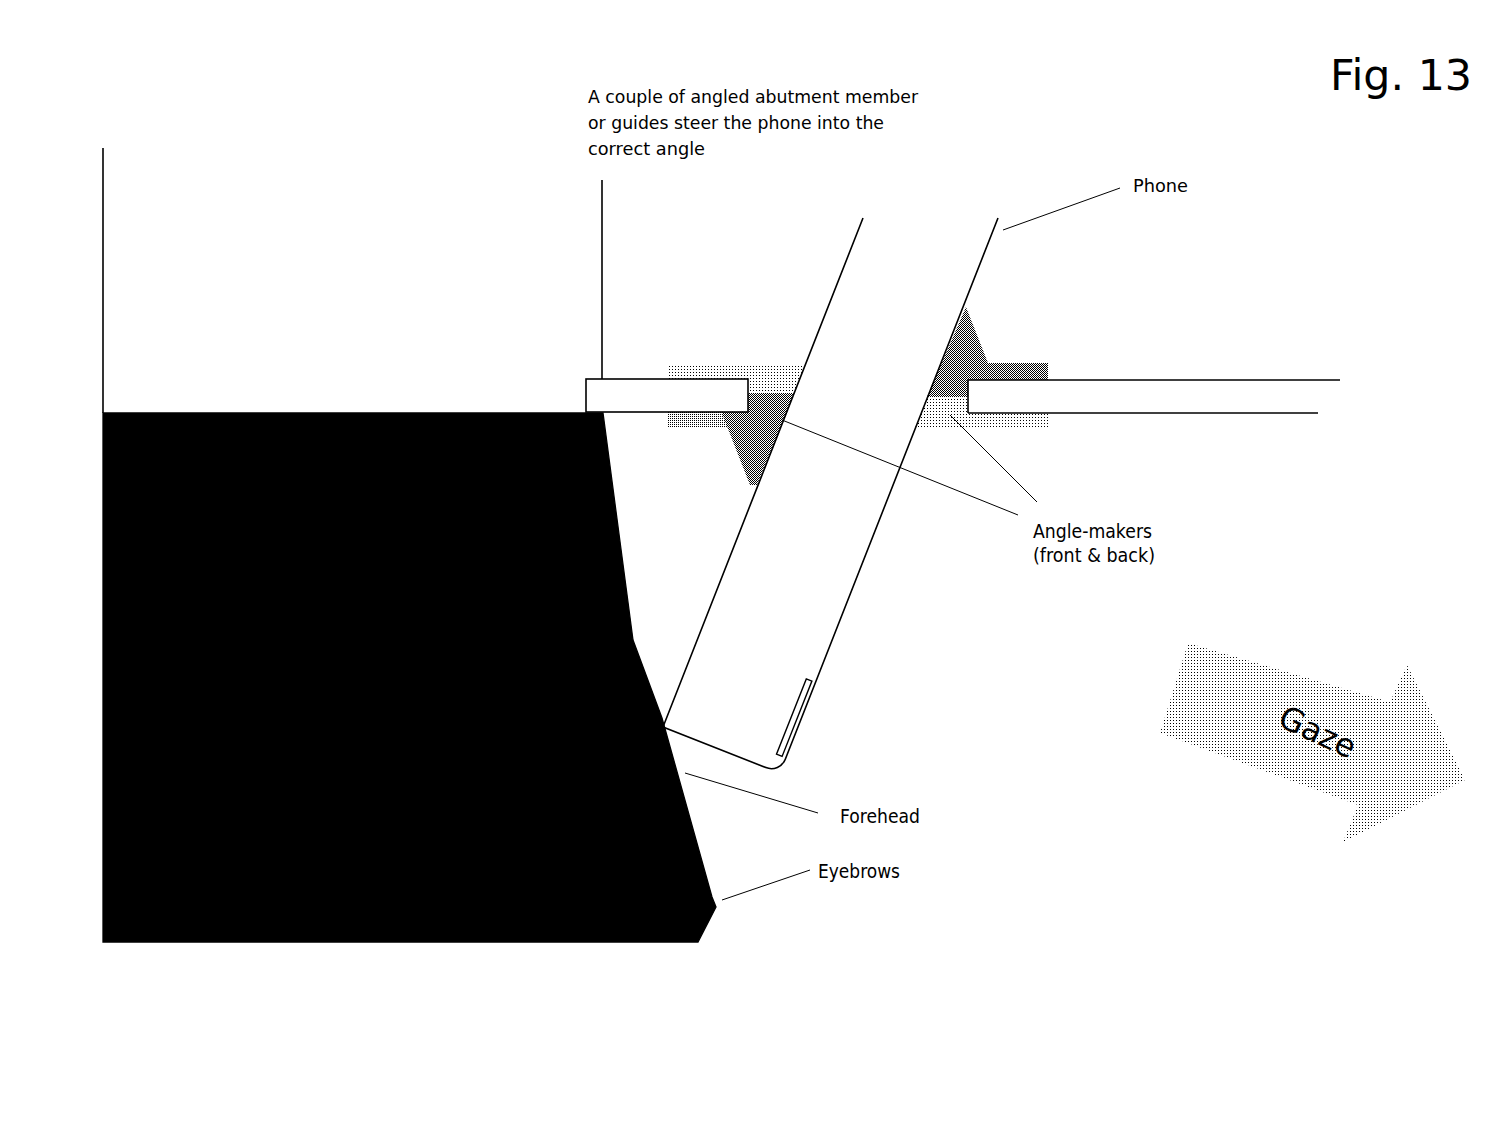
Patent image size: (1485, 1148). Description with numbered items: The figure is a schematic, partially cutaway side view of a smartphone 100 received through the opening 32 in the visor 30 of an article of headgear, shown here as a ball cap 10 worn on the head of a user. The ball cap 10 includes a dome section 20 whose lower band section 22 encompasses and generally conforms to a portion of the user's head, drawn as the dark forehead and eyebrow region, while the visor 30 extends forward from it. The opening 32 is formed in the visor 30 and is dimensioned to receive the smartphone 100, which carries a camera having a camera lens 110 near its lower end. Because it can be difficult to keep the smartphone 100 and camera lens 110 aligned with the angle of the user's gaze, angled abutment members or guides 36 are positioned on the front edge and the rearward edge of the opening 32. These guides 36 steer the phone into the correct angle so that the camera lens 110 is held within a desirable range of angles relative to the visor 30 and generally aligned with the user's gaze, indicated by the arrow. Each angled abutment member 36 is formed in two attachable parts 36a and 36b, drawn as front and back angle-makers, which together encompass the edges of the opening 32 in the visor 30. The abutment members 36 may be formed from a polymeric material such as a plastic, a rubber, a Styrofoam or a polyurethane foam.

The ball cap 10 is at (603, 216).
The dome section 20 is at (423, 188).
The band section 22 is at (545, 393).
The visor 30 is at (672, 370).
The opening 32 is at (970, 393).
The angled abutment member 36 is at (745, 445).
The attachable part 36a is at (672, 428).
The attachable part 36b is at (768, 367).
The smartphone 100 is at (907, 237).
The camera lens 110 is at (795, 737).